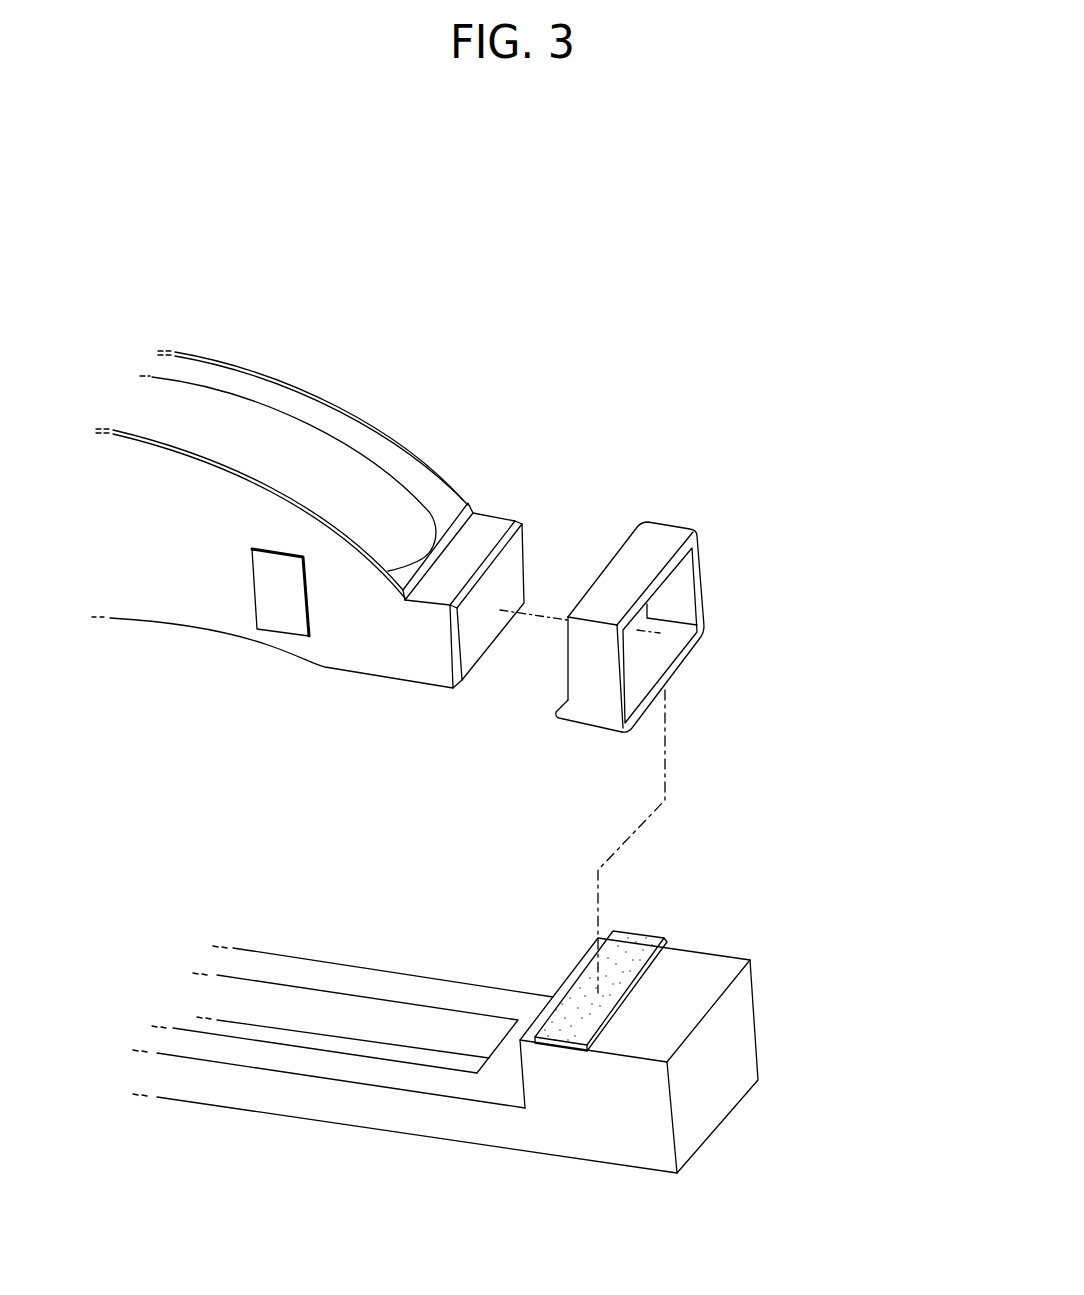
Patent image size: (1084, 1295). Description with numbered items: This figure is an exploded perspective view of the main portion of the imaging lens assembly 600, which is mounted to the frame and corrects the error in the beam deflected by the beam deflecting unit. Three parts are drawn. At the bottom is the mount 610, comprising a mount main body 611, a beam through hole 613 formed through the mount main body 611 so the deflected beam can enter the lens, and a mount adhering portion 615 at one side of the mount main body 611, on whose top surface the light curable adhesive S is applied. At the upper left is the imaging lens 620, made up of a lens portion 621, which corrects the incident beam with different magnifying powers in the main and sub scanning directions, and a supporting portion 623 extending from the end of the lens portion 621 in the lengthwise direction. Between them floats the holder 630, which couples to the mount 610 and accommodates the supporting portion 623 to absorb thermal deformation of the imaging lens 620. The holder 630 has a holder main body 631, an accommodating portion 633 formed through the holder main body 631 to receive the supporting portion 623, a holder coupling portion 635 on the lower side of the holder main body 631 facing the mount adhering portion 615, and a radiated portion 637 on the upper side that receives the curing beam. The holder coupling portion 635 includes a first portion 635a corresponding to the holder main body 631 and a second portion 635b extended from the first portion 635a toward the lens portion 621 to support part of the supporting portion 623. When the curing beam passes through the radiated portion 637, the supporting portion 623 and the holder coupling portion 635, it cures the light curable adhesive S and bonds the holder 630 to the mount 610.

The imaging lens assembly 600 is at (633, 362).
The mount 610 is at (491, 1049).
The mount main body 611 is at (398, 1112).
The beam through hole 613 is at (288, 1034).
The mount adhering portion 615 is at (700, 968).
The light curable adhesive S is at (635, 948).
The imaging lens 620 is at (273, 678).
The lens portion 621 is at (165, 600).
The supporting portion 623 is at (512, 573).
The holder 630 is at (700, 647).
The holder main body 631 is at (702, 550).
The accommodating portion 633 is at (680, 600).
The holder coupling portion 635 is at (703, 657).
The first portion 635a is at (608, 722).
The second portion 635b is at (556, 720).
The radiated portion 637 is at (657, 540).